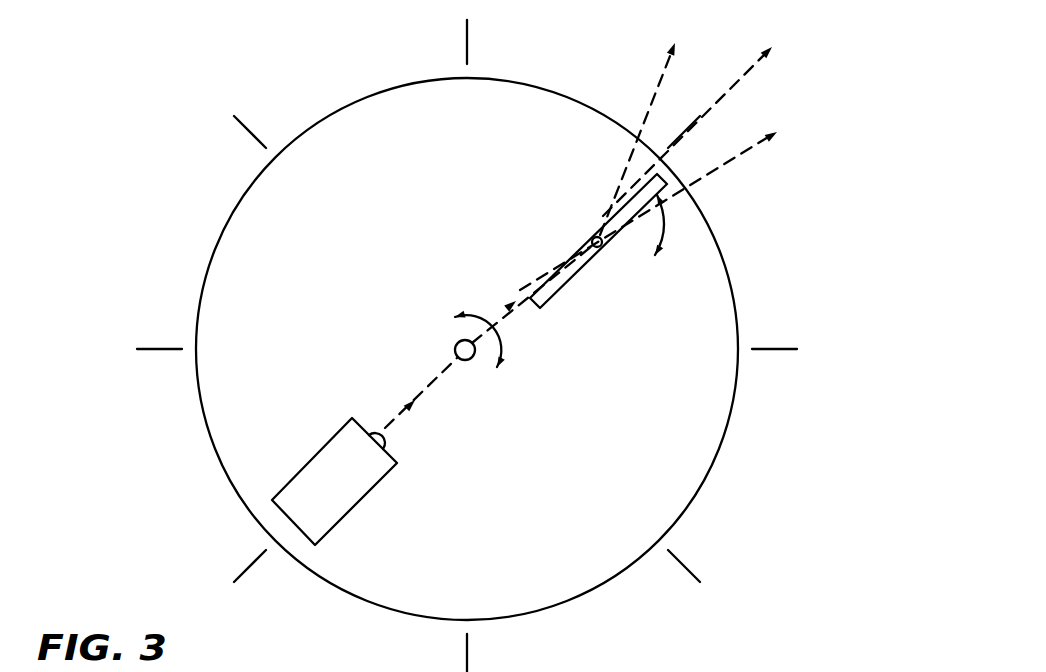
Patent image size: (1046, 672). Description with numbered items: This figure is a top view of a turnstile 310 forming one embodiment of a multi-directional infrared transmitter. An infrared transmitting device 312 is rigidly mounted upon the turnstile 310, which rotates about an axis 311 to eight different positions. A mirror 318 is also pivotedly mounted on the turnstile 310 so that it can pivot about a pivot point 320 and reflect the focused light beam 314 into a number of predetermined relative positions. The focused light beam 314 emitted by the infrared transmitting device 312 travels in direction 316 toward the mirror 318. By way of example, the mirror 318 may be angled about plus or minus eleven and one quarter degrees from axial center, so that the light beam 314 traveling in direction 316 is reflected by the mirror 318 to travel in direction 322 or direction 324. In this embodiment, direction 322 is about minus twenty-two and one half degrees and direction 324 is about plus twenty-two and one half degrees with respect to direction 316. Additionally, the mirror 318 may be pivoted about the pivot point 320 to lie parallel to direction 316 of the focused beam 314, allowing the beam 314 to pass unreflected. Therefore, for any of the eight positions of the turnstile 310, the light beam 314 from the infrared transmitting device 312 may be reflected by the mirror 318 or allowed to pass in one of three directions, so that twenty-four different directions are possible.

The turnstile 310 is at (753, 260).
The axis 311 is at (470, 362).
The infrared transmitting device 312 is at (310, 455).
The focused light beam 314 is at (402, 392).
The direction 316 is at (503, 306).
The mirror 318 is at (561, 292).
The pivot point 320 is at (591, 238).
The direction 322 is at (651, 95).
The direction 324 is at (731, 158).